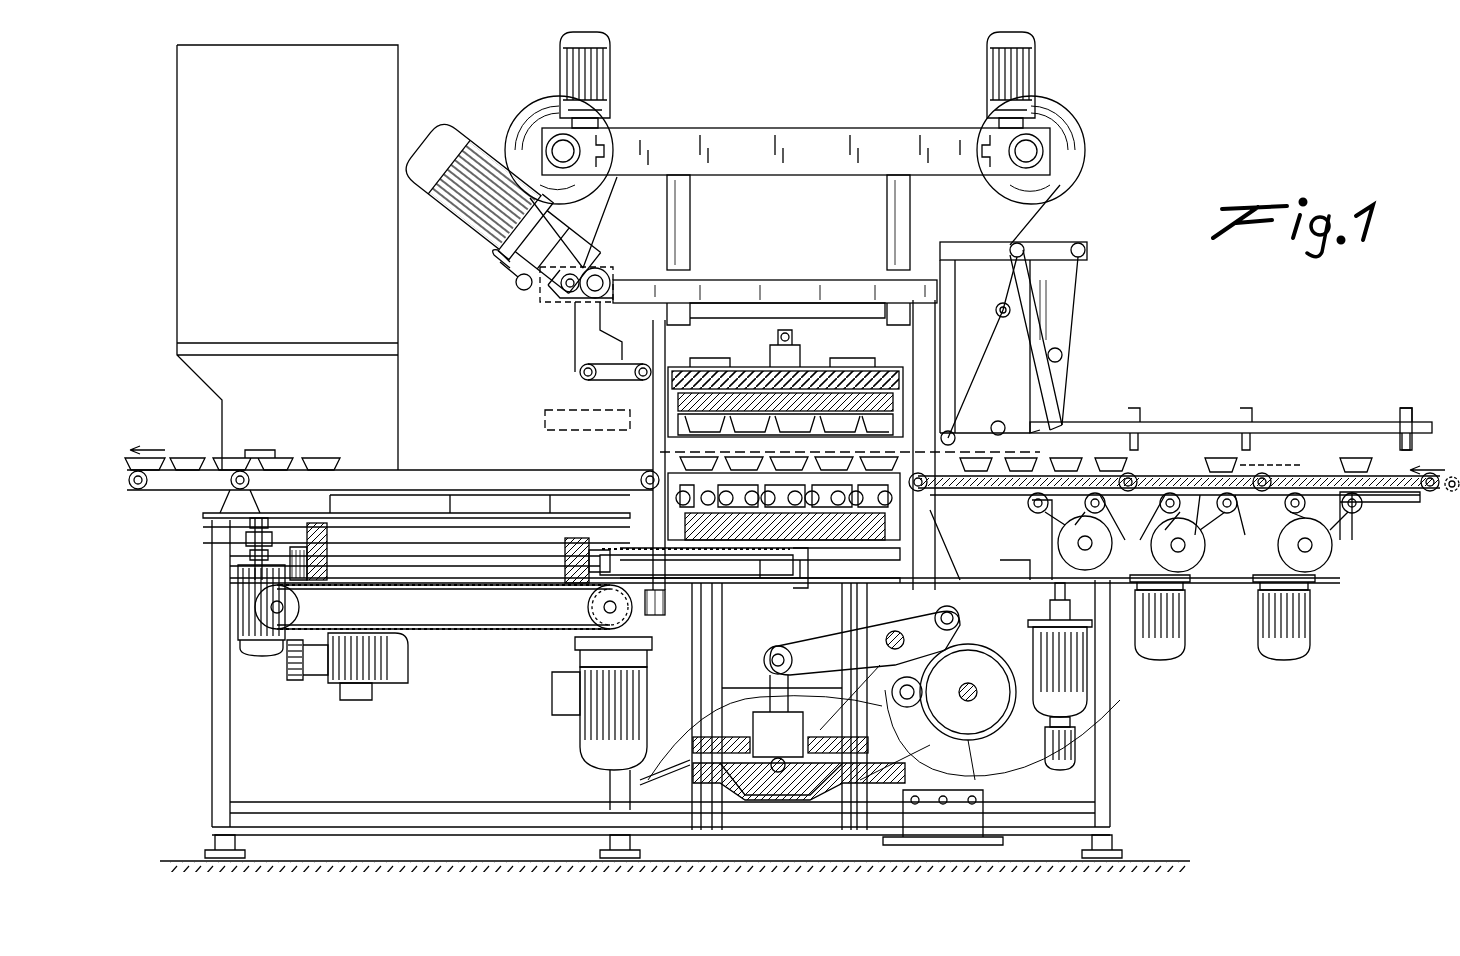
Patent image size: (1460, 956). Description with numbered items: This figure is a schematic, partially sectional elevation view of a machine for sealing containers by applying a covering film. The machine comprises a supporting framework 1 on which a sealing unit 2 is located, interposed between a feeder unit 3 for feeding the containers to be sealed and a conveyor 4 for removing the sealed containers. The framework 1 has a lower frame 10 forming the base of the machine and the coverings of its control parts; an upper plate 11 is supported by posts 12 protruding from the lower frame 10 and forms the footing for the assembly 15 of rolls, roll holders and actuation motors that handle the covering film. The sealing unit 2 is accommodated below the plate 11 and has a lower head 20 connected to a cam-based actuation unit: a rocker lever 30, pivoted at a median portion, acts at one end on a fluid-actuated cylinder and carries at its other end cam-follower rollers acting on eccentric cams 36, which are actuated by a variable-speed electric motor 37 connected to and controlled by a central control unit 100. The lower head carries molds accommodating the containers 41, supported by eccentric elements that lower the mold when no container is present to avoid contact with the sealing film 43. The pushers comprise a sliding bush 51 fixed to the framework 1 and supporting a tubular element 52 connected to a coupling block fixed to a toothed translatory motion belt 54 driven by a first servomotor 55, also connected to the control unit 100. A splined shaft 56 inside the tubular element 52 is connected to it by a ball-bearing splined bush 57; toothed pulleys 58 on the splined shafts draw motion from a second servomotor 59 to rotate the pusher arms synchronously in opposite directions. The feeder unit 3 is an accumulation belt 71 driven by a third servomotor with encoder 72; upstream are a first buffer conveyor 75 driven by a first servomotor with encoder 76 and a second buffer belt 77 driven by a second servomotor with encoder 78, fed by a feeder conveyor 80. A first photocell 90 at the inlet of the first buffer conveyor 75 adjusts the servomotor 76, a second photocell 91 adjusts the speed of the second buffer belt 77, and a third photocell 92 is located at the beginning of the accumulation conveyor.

The supporting framework 1 is at (205, 706).
The sealing unit 2 is at (590, 417).
The feeder unit 3 is at (1368, 398).
The conveyor 4 is at (432, 462).
The lower frame 10 is at (775, 585).
The upper plate 11 is at (745, 288).
The posts 12 is at (925, 332).
The assembly of film handling devices 15 is at (812, 128).
The lower head 20 is at (900, 508).
The rocker lever 30 is at (940, 630).
The eccentric cams 36 is at (985, 705).
The variable-speed electric motor 37 is at (680, 740).
The containers 41 is at (1233, 500).
The sealing film 43 is at (893, 442).
The sliding bush 51 is at (660, 618).
The tubular element 52 is at (773, 560).
The toothed translatory motion belt 54 is at (440, 632).
The first servomotor 55 is at (605, 715).
The splined shaft 56 is at (490, 556).
The splined bush 57 is at (568, 607).
The toothed pulleys 58 is at (245, 548).
The second servomotor 59 is at (345, 670).
The accumulation belt 71 is at (1135, 478).
The third servomotor with encoder 72 is at (1080, 690).
The first buffer conveyor 75 is at (1395, 492).
The first servomotor with encoder 76 is at (1290, 628).
The second buffer belt 77 is at (1187, 490).
The second servomotor with encoder 78 is at (1170, 625).
The feeder conveyor 80 is at (1445, 495).
The first photocell 90 is at (1406, 420).
The second photocell 91 is at (1250, 435).
The third photocell 92 is at (1132, 426).
The central control unit 100 is at (372, 97).